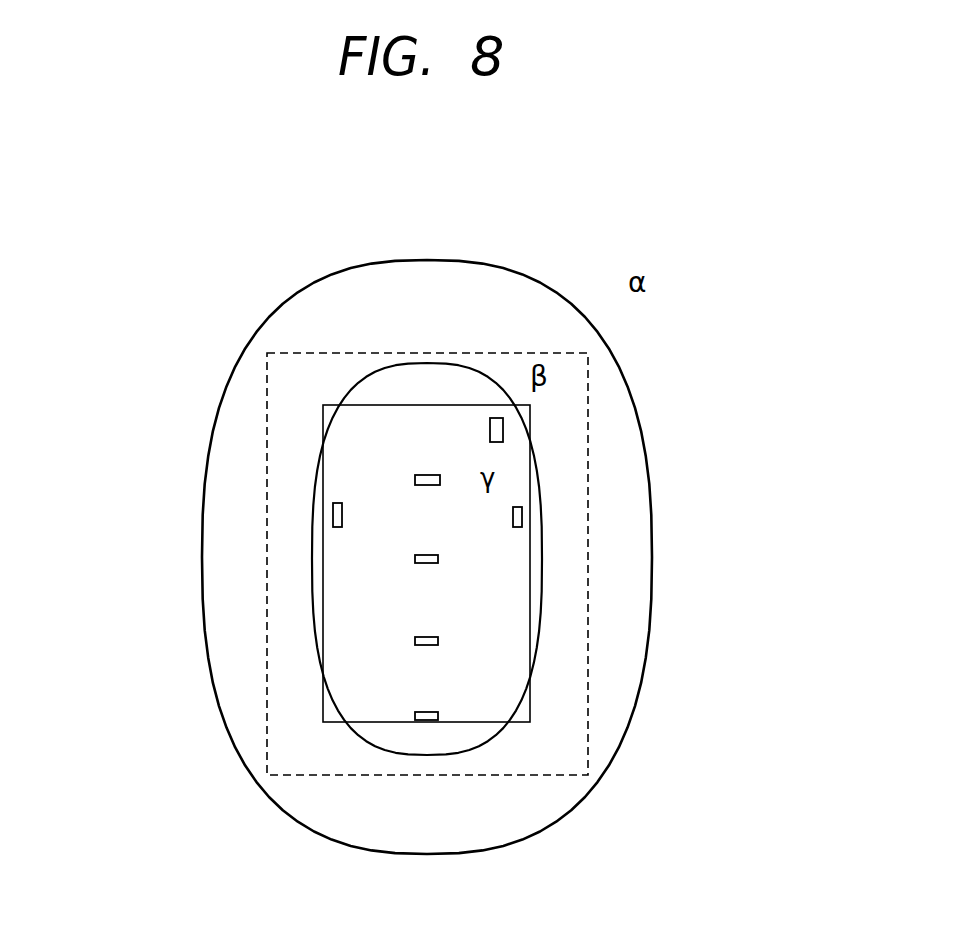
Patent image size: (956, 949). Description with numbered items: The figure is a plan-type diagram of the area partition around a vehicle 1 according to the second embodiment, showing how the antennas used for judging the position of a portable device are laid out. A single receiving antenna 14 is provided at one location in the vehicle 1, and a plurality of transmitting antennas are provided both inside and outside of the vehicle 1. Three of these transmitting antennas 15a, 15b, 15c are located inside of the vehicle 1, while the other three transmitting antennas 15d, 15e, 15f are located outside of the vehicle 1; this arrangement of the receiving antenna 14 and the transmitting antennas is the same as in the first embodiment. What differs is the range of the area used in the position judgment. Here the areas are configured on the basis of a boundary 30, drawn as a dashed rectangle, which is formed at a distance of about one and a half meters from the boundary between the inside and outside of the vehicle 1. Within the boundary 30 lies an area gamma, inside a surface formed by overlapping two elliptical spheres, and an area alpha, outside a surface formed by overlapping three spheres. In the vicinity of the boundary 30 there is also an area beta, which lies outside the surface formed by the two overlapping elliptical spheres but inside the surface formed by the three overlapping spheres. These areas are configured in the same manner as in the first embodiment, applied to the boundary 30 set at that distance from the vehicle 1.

The vehicle 1 is at (530, 682).
The receiving antenna 14 is at (503, 430).
The transmitting antenna 15a is at (428, 472).
The transmitting antenna 15b is at (438, 557).
The transmitting antenna 15c is at (415, 640).
The transmitting antenna 15d is at (336, 503).
The transmitting antenna 15e is at (522, 517).
The transmitting antenna 15f is at (438, 714).
The boundary 30 is at (588, 366).